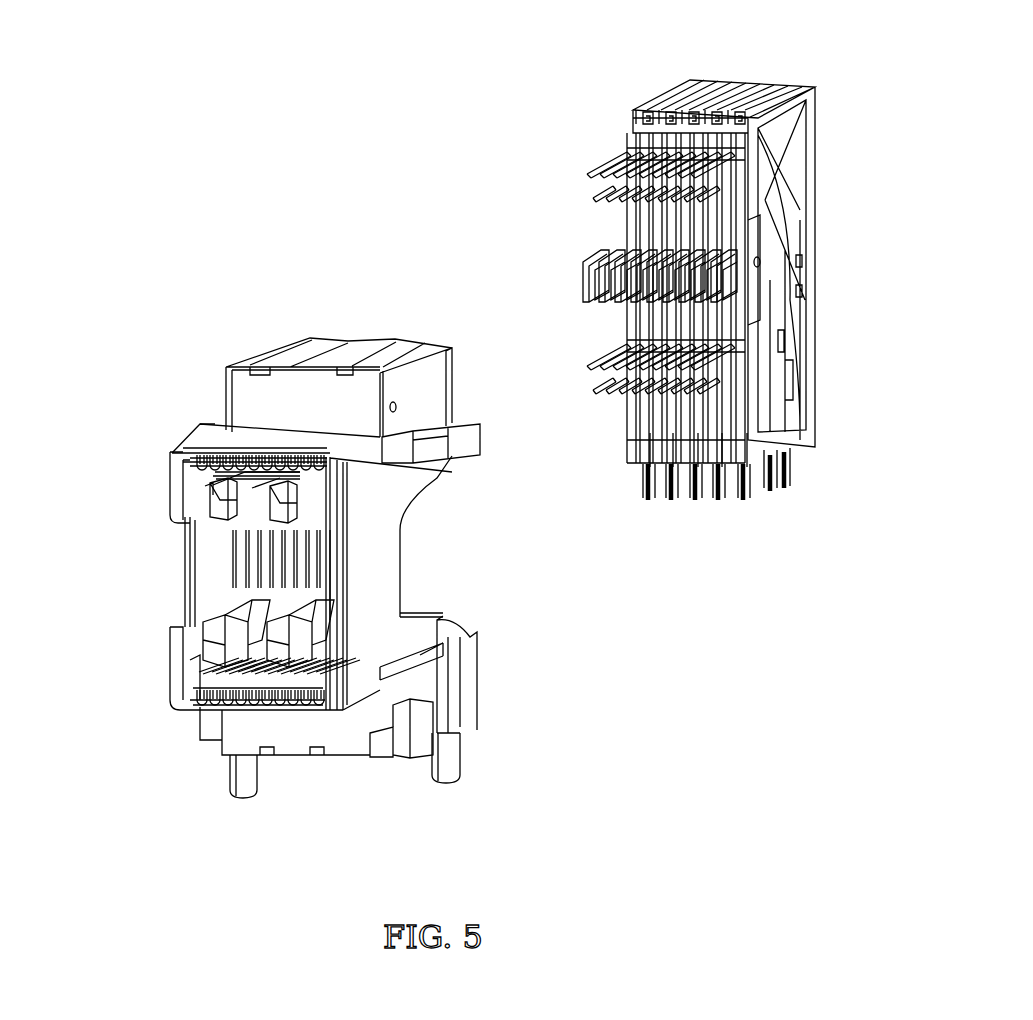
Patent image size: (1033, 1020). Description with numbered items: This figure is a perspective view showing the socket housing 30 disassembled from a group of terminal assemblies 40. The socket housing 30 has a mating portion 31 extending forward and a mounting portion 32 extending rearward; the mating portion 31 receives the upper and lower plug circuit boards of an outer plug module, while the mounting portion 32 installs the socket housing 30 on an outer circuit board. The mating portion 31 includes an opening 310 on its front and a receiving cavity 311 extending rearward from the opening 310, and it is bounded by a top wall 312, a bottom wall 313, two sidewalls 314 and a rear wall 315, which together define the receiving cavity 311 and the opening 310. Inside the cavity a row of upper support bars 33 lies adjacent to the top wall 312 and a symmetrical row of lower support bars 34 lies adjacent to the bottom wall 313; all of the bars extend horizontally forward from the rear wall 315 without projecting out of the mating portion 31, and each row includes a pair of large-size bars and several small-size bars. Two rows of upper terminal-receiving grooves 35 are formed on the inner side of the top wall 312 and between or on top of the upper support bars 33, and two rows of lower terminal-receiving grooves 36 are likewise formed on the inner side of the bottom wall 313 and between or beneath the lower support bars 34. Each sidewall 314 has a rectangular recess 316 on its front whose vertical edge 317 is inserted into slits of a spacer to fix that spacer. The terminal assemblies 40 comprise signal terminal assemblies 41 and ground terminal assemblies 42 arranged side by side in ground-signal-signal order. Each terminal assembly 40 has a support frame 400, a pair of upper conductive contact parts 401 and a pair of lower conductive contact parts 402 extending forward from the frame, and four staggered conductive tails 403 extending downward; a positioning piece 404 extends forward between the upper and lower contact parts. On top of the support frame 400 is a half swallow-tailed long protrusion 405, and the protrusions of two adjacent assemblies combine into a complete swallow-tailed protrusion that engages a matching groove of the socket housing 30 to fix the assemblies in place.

The socket housing 30 is at (228, 358).
The mating portion 31 is at (222, 442).
The mounting portion 32 is at (275, 345).
The upper support bars 33 is at (207, 497).
The lower support bars 34 is at (205, 647).
The upper terminal-receiving grooves 35 is at (283, 490).
The lower terminal-receiving grooves 36 is at (277, 703).
The opening 310 is at (178, 485).
The receiving cavity 311 is at (209, 489).
The top wall 312 is at (213, 447).
The bottom wall 313 is at (197, 682).
The sidewalls 314 is at (195, 654).
The rear wall 315 is at (235, 603).
The rectangular recesses 316 is at (340, 615).
The vertical edge 317 is at (190, 577).
The terminal assemblies 40 is at (652, 42).
The signal terminal assemblies 41 is at (647, 112).
The ground terminal assemblies 42 is at (637, 112).
The support frame 400 is at (632, 133).
The upper conductive contact parts 401 is at (592, 200).
The lower conductive contact parts 402 is at (590, 388).
The conductive tails 403 is at (640, 483).
The positioning piece 404 is at (585, 283).
The half swallow-tailed long protrusion 405 is at (633, 115).